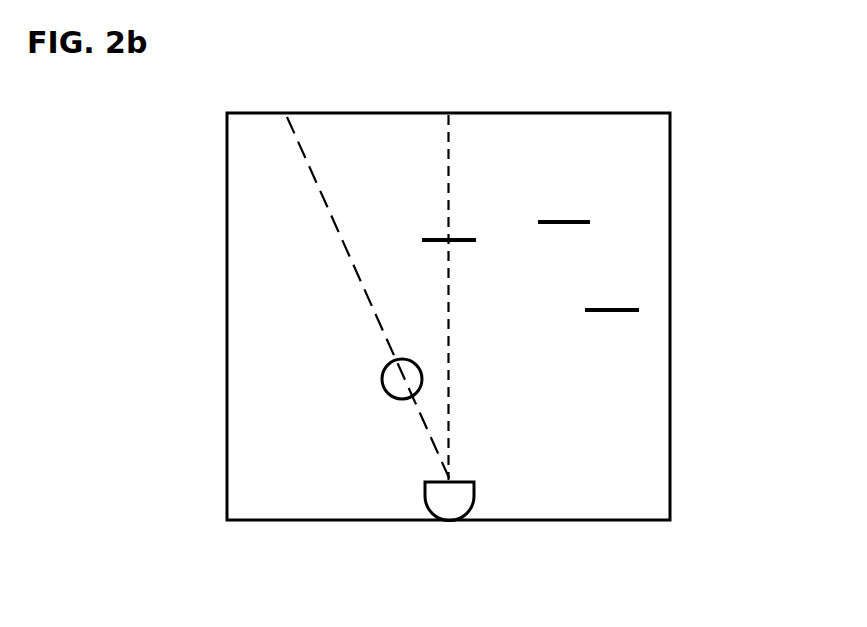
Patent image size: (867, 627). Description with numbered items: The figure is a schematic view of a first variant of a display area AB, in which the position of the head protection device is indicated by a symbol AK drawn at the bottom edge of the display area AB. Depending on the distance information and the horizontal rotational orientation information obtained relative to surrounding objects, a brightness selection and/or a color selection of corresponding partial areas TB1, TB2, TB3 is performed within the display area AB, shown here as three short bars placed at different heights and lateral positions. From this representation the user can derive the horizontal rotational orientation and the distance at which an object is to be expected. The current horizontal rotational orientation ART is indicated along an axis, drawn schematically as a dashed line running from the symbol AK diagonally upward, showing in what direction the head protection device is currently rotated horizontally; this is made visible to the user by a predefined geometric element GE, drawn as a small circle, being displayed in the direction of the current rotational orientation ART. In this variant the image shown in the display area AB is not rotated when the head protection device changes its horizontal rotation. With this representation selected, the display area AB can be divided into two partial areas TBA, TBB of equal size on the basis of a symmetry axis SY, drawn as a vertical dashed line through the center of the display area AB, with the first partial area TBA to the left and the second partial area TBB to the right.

The display area AB is at (670, 191).
The first partial area TBA is at (350, 128).
The second partial area TBB is at (543, 127).
The symmetry axis SY is at (450, 146).
The current horizontal rotational orientation ART is at (331, 221).
The partial area TB1 is at (440, 239).
The partial area TB2 is at (552, 221).
The partial area TB3 is at (600, 309).
The geometric element GE is at (383, 380).
The symbol AK is at (450, 522).